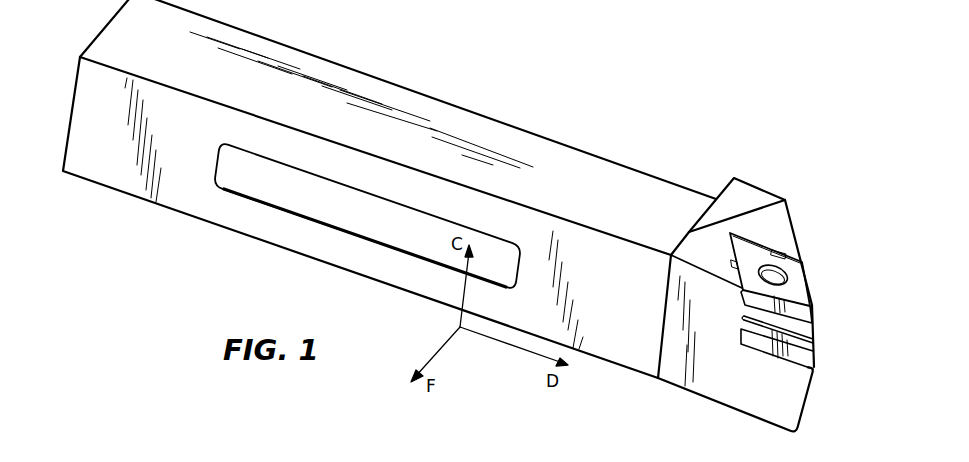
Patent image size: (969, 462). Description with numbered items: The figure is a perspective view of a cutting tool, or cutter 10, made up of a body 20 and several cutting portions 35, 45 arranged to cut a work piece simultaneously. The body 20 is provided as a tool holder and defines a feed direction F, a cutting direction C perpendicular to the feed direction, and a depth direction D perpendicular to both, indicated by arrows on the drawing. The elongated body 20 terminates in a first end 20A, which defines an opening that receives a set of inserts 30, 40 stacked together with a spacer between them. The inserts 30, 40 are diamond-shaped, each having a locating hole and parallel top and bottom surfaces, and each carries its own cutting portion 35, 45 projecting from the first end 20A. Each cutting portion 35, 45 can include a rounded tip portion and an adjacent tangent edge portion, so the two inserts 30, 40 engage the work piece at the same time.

The cutting tool 10 is at (586, 103).
The body 20 is at (634, 320).
The first end 20A is at (727, 417).
The insert 30 is at (806, 292).
The cutting portion 35 is at (815, 311).
The insert 40 is at (814, 337).
The cutting portion 45 is at (815, 368).